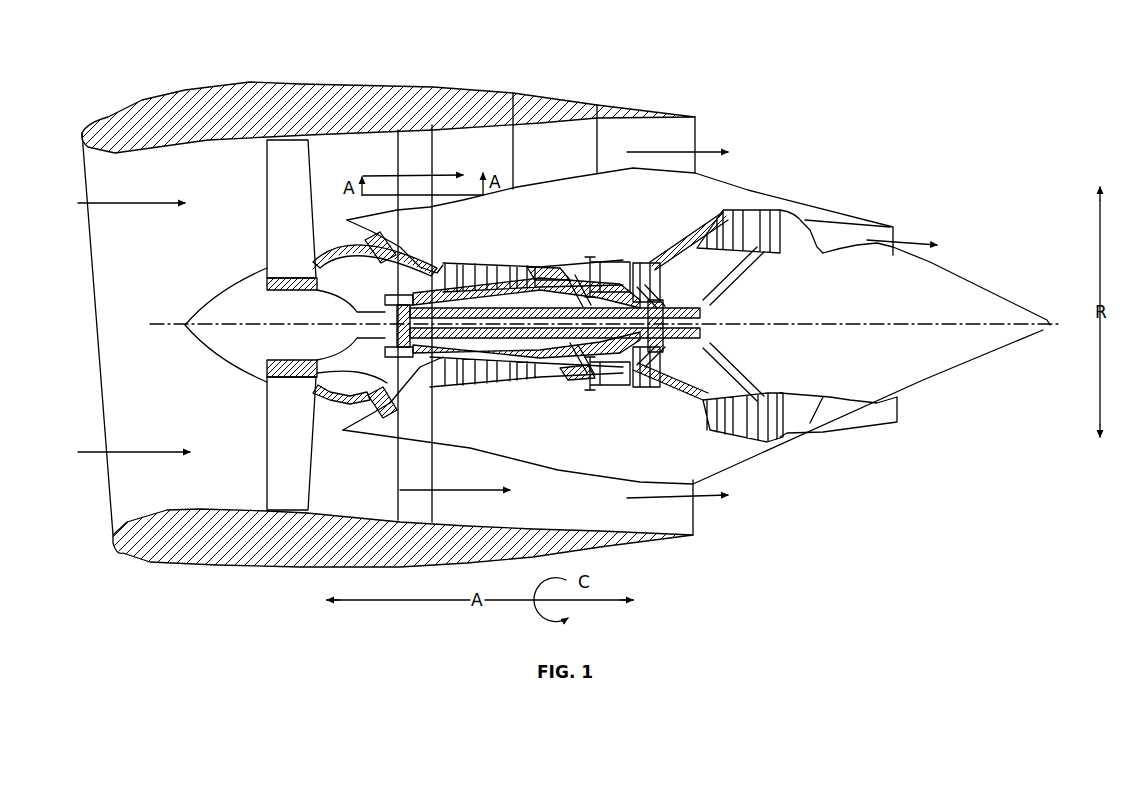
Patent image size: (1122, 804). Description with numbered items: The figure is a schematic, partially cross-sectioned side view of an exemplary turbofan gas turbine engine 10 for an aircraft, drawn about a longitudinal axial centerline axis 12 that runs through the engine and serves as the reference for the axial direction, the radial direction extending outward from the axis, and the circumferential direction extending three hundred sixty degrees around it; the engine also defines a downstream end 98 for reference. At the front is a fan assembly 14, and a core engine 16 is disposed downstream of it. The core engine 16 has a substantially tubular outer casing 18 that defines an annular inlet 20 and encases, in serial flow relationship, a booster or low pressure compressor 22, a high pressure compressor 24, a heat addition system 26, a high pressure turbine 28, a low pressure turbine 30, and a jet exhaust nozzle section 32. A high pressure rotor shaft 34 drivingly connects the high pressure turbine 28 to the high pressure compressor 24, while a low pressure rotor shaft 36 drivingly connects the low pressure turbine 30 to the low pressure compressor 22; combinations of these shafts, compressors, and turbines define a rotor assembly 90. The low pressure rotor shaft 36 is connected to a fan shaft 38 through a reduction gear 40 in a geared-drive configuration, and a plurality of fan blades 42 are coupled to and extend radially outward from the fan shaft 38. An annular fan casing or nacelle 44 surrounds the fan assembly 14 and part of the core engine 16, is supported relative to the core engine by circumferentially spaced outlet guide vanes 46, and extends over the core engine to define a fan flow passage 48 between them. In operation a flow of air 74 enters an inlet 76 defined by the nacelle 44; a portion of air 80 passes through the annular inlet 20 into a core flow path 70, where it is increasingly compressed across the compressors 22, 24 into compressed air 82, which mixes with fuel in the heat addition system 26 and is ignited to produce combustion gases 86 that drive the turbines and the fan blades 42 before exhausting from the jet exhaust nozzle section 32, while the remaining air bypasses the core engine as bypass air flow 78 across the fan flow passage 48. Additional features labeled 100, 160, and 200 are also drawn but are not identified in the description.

The gas turbine engine 10 is at (818, 90).
The axial centerline axis 12 is at (857, 323).
The fan assembly 14 is at (333, 150).
The core engine 16 is at (598, 168).
The outer casing 18 is at (563, 467).
The annular inlet 20 is at (342, 432).
The low pressure compressor 22 is at (390, 380).
The high pressure compressor 24 is at (458, 387).
The heat addition system 26 is at (603, 397).
The high pressure turbine 28 is at (663, 380).
The low pressure turbine 30 is at (770, 447).
The jet exhaust nozzle section 32 is at (827, 427).
The high pressure rotor shaft 34 is at (655, 293).
The low pressure rotor shaft 36 is at (733, 282).
The fan shaft 38 is at (305, 300).
The reduction gear 40 is at (395, 295).
The fan blades 42 is at (285, 175).
The nacelle 44 is at (270, 90).
The outlet guide vanes 46 is at (420, 153).
The fan flow passage 48 is at (549, 490).
The core flow path 70 is at (530, 263).
The flow of air 74 is at (130, 203).
The inlet 76 is at (160, 473).
The bypass air flow 78 is at (385, 173).
The portion of air 80 is at (337, 230).
The compressed air 82 is at (447, 260).
The combustion gases 86 is at (647, 260).
The rotor assembly 90 is at (503, 263).
The downstream end 98 is at (572, 317).
The core air flow 100 is at (377, 267).
The fan hub frame 160 is at (335, 350).
The heat exchanger section 200 is at (533, 150).